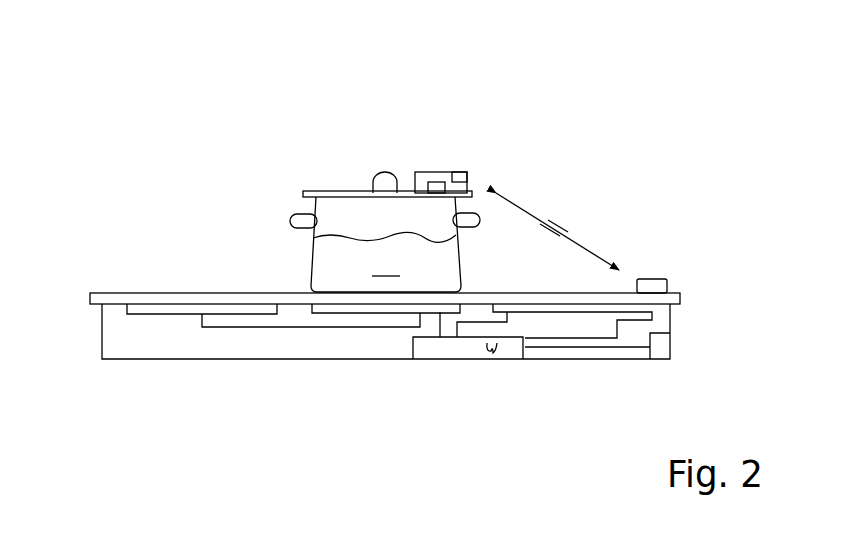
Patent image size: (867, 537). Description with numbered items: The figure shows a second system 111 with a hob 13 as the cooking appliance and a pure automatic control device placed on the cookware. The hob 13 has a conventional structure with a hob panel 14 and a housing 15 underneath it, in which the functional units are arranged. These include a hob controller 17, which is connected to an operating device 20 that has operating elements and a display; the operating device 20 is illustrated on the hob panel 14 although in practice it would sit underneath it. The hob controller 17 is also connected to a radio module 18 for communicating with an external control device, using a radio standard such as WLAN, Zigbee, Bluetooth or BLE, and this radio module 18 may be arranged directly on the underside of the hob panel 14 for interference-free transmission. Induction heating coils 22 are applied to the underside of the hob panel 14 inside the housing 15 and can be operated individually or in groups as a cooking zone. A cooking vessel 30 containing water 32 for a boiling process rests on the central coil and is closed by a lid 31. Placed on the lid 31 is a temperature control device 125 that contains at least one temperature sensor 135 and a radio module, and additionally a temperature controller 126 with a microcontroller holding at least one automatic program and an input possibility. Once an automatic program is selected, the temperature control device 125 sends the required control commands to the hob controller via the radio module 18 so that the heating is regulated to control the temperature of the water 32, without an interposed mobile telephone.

The cooking system 111 is at (201, 110).
The hob 13 is at (123, 193).
The hob panel 14 is at (102, 293).
The housing 15 is at (120, 357).
The induction heating coils 22 is at (182, 310).
The hob controller 17 is at (452, 343).
The radio module 18 is at (662, 347).
The operating device 20 is at (648, 279).
The cooking vessel 30 is at (352, 244).
The lid 31 is at (343, 192).
The water 32 is at (386, 264).
The temperature control device 125 is at (444, 173).
The temperature sensor 135 is at (438, 190).
The temperature controller 126 is at (463, 174).